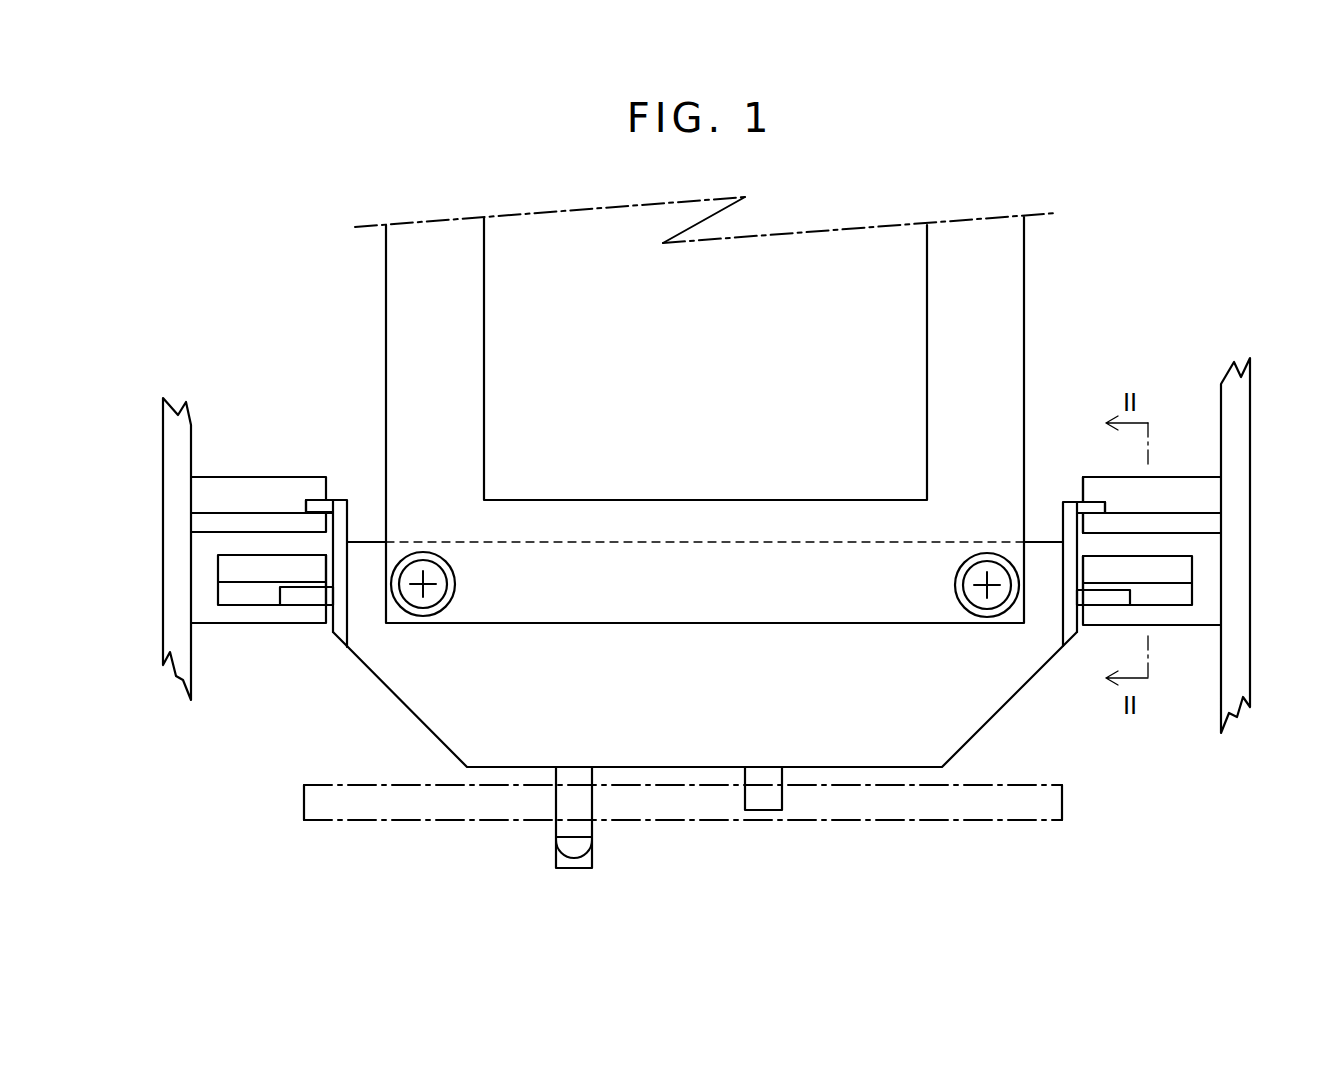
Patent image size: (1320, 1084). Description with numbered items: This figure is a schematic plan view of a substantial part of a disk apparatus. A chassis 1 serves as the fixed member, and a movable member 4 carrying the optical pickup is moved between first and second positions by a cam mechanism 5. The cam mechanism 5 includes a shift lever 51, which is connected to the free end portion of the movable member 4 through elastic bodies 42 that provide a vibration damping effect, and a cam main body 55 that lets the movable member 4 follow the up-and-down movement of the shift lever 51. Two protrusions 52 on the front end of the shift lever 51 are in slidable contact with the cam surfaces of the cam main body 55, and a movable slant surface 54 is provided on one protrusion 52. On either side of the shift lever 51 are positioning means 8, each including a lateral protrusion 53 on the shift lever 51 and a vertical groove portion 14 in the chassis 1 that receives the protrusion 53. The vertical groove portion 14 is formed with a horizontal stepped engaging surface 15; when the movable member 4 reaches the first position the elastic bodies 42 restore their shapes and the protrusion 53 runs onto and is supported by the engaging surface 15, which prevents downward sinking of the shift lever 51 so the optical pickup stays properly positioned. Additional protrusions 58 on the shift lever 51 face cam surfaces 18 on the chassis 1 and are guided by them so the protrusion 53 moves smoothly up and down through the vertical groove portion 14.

The chassis 1 is at (163, 458).
The movable member 4 is at (1024, 285).
The cam mechanism 5 is at (497, 850).
The positioning means 8 is at (349, 477).
The vertical groove portion 14 is at (213, 617).
The engaging surface 15 is at (258, 592).
The cam surface 18 is at (1183, 525).
The elastic body 42 is at (433, 613).
The shift lever 51 is at (1017, 705).
The protrusion 52 is at (592, 805).
The lateral protrusion 53 is at (309, 600).
The movable slant surface 54 is at (573, 856).
The cam main body 55 is at (977, 822).
The additional protrusion 58 is at (316, 498).